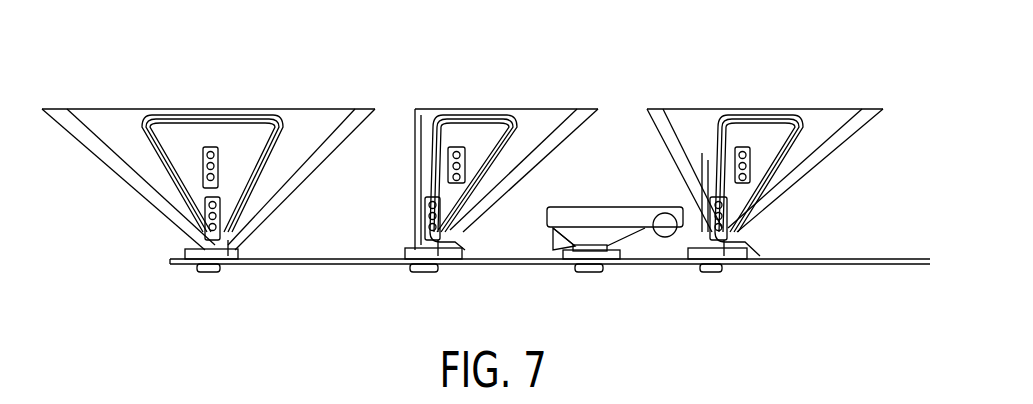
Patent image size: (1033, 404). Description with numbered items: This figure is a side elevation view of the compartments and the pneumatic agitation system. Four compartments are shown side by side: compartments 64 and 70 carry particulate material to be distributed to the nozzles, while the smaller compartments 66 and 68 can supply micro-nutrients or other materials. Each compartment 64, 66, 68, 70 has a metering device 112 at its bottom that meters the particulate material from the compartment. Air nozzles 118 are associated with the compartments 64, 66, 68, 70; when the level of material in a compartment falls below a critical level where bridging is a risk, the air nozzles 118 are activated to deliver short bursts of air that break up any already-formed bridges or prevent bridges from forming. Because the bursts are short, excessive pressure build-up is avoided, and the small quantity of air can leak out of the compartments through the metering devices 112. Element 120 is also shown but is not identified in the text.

The compartment 64 is at (828, 99).
The compartment 66 is at (626, 196).
The compartment 68 is at (550, 100).
The compartment 70 is at (295, 100).
The metering device 112 is at (197, 270).
The air nozzle 118 is at (194, 203).
The fastener 120 is at (228, 257).